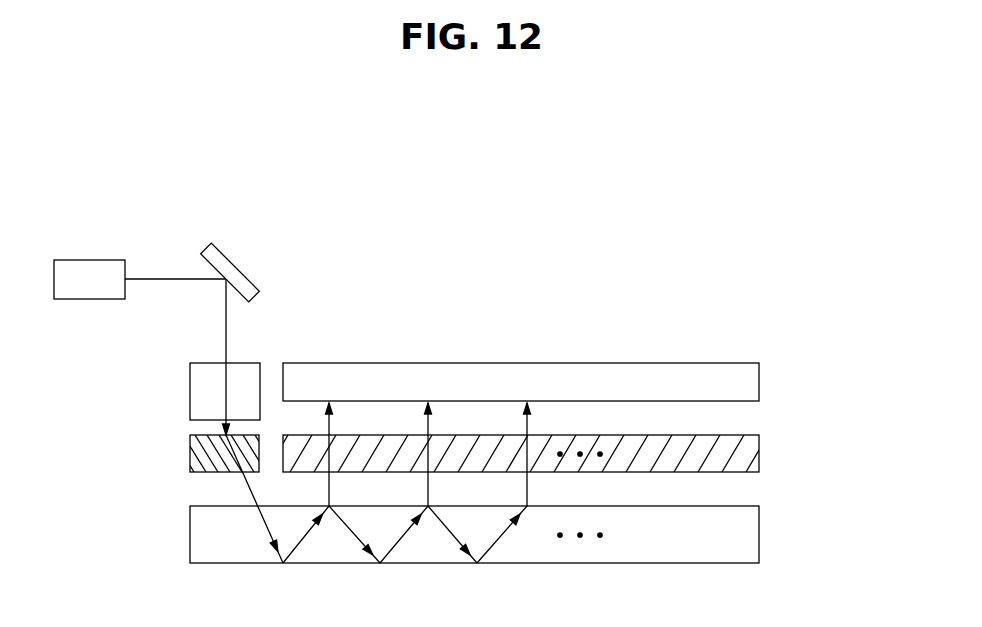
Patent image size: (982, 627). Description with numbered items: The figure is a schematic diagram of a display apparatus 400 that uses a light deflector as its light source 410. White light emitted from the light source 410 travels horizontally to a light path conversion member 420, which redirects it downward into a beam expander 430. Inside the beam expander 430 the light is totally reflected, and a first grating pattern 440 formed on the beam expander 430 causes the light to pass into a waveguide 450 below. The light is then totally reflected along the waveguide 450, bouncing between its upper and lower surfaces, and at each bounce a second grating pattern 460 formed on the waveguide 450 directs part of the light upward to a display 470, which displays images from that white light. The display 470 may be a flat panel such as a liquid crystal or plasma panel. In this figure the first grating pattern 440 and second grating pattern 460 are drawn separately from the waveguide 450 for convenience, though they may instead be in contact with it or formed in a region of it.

The display apparatus 400 is at (749, 308).
The light source 410 is at (90, 260).
The light path conversion member 420 is at (236, 271).
The beam expander 430 is at (196, 392).
The first grating pattern 440 is at (196, 455).
The waveguide 450 is at (474, 483).
The second grating pattern 460 is at (759, 455).
The display 470 is at (759, 381).